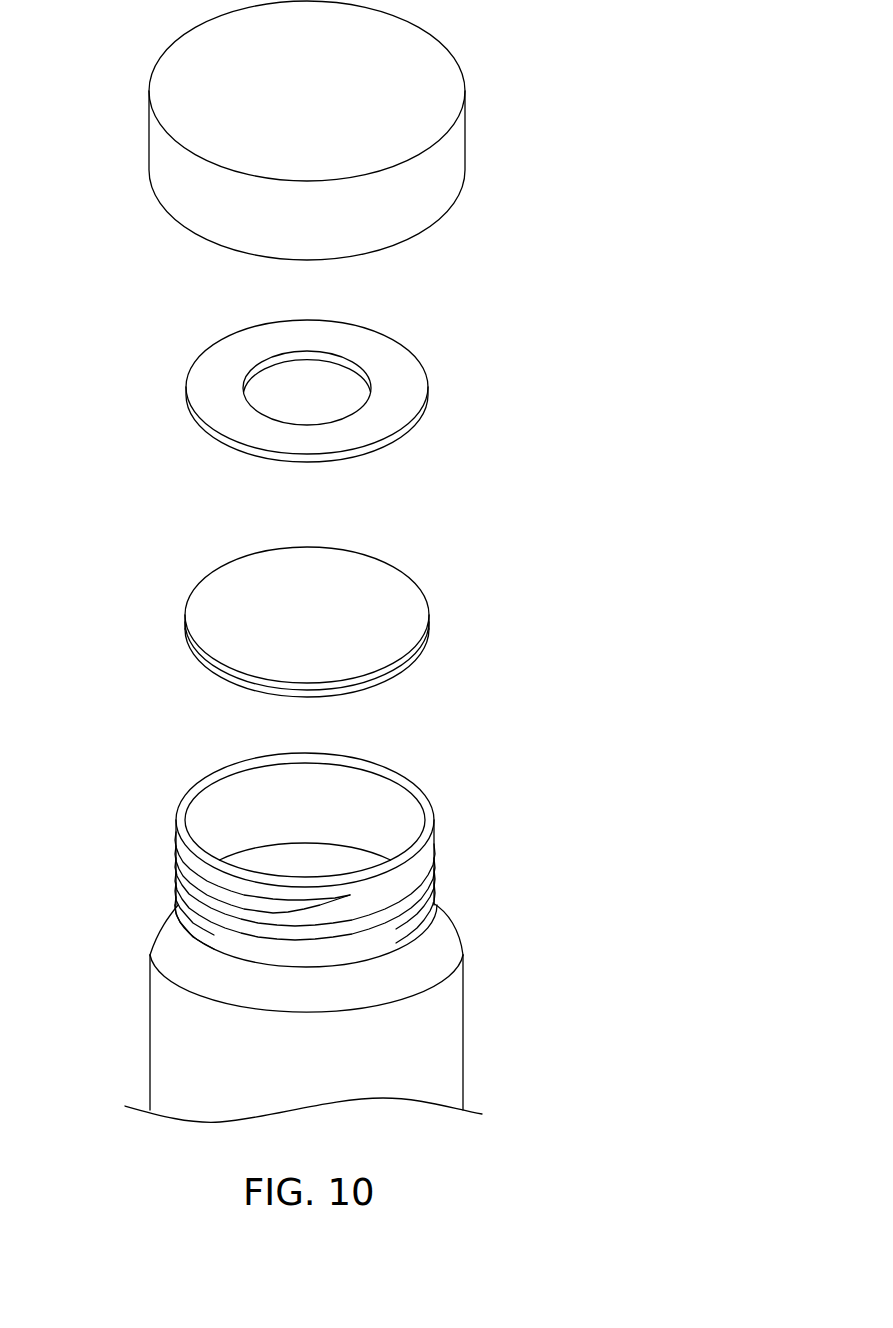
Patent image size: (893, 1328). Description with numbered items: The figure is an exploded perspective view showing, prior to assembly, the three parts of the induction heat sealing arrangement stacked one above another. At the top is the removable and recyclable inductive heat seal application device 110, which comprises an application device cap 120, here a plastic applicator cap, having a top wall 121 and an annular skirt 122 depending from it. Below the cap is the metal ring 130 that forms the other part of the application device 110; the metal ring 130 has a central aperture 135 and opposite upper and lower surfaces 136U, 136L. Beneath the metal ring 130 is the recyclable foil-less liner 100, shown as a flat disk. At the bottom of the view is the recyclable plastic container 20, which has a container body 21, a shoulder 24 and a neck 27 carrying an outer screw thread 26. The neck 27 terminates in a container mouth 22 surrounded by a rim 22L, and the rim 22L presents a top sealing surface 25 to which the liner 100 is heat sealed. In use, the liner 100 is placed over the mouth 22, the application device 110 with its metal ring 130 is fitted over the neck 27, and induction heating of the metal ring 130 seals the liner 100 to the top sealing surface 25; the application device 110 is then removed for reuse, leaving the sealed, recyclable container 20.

The removable and recyclable inductive heat seal application device 110 is at (573, 487).
The application device cap 120 is at (462, 40).
The top wall 121 is at (207, 47).
The annular skirt 122 is at (467, 148).
The metal ring 130 is at (200, 342).
The aperture 135 is at (318, 375).
The upper surface 136U is at (393, 377).
The lower surface 136L is at (417, 420).
The recyclable foil-less liner 100 is at (210, 558).
The plastic container 20 is at (80, 860).
The container body 21 is at (150, 1037).
The container mouth 22 is at (240, 815).
The rim 22L is at (430, 800).
The shoulder 24 is at (436, 906).
The top sealing surface 25 is at (385, 772).
The outer screw thread 26 is at (442, 853).
The neck 27 is at (195, 935).